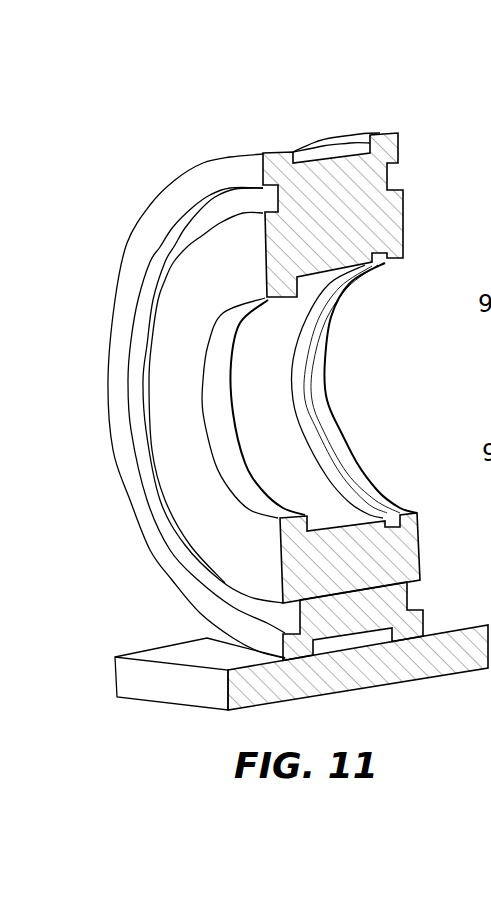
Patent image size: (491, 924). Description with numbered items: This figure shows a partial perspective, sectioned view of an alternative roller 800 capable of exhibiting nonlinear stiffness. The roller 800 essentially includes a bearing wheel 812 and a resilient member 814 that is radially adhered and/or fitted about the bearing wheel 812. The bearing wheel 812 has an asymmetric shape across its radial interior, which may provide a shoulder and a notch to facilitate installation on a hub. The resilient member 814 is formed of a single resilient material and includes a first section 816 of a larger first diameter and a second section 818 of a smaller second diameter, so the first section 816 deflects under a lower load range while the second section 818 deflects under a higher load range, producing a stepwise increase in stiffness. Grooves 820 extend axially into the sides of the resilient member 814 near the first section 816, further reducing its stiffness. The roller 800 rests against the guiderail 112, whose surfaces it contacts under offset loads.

The roller 800 is at (266, 362).
The bearing wheel 812 is at (177, 327).
The resilient member 814 is at (122, 452).
The first section 816 is at (273, 153).
The second section 818 is at (323, 157).
The grooves 820 is at (210, 217).
The guiderail 112 is at (175, 680).